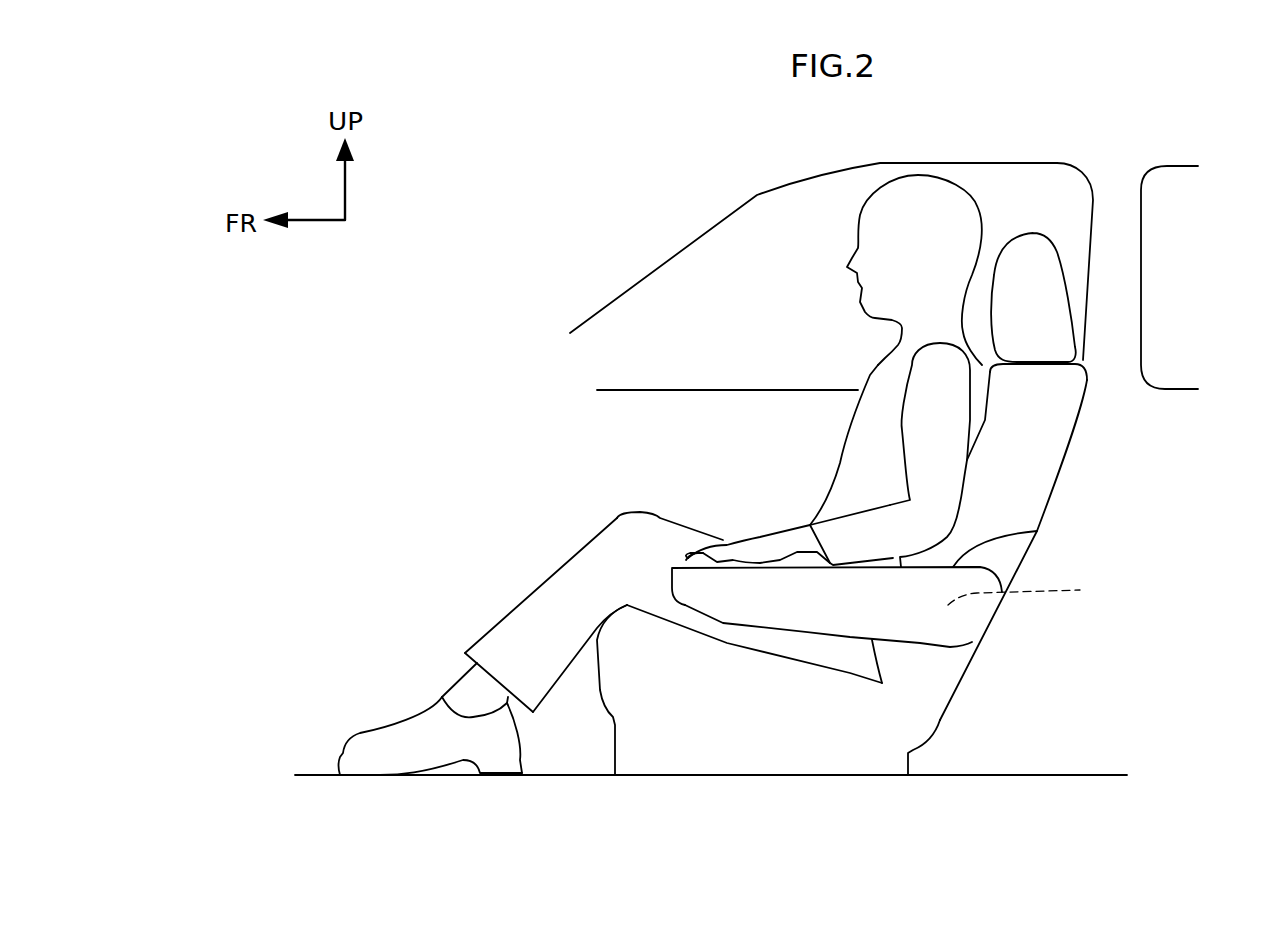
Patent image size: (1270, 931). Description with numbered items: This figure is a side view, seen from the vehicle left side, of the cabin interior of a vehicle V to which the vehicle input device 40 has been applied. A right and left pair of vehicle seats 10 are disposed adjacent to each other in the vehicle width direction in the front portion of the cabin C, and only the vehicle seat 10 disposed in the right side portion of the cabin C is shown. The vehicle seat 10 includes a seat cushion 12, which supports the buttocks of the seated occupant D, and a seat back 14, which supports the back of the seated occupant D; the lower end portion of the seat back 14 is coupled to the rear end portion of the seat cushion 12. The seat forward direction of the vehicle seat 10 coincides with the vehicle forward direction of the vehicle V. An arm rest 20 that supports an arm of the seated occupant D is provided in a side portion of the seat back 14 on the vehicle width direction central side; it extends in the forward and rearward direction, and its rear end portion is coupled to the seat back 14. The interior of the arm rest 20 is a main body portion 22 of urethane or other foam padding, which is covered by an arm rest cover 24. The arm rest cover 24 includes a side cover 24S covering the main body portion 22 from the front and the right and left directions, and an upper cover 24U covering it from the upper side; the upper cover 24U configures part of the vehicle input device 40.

The vehicle seat 10 is at (912, 540).
The seat cushion 12 is at (775, 680).
The seat back 14 is at (1030, 462).
The arm rest 20 is at (927, 630).
The main body portion 22 is at (1031, 590).
The arm rest cover 24 is at (936, 635).
The upper cover 24U is at (1000, 534).
The side cover 24S is at (742, 608).
The vehicle input device 40 is at (672, 548).
The vehicle V is at (610, 197).
The cabin C is at (697, 443).
The seated occupant D is at (865, 377).